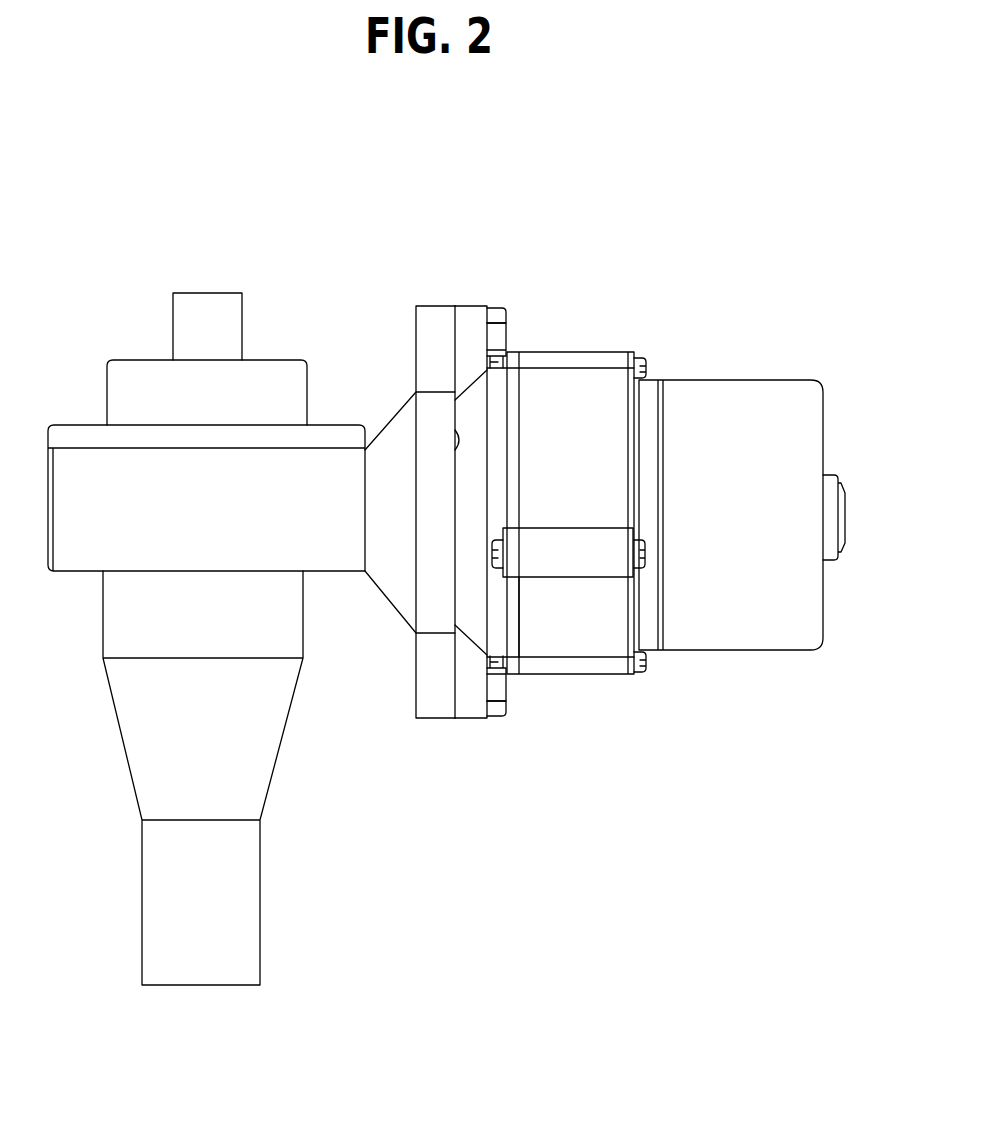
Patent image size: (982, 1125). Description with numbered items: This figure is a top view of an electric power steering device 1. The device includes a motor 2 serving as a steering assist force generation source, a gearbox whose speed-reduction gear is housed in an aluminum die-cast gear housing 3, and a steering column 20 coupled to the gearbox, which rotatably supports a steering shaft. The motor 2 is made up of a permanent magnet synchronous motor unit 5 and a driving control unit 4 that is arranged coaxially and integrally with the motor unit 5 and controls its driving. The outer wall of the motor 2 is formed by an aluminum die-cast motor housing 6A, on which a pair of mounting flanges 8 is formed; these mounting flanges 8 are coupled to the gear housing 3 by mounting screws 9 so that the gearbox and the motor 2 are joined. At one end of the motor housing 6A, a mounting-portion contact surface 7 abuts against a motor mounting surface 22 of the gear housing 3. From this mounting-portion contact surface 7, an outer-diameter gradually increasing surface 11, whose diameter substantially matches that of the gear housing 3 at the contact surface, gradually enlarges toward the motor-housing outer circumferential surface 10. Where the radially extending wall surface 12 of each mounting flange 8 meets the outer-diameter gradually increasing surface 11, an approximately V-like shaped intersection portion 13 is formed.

The electric power steering device 1 is at (443, 896).
The motor 2 is at (528, 812).
The gear housing 3 is at (428, 432).
The driving control unit 4 is at (570, 650).
The motor unit 5 is at (742, 640).
The motor housing 6A is at (548, 607).
The mounting-portion contact surface 7 is at (452, 546).
The mounting flanges 8 is at (475, 305).
The mounting screws 9 is at (495, 310).
The motor-housing outer circumferential surface 10 is at (542, 390).
The outer-diameter gradually increasing surface 11 is at (478, 400).
The wall surface 12 is at (463, 330).
The intersection portion 13 is at (460, 400).
The steering column 20 is at (75, 458).
The motor mounting surface 22 is at (456, 432).